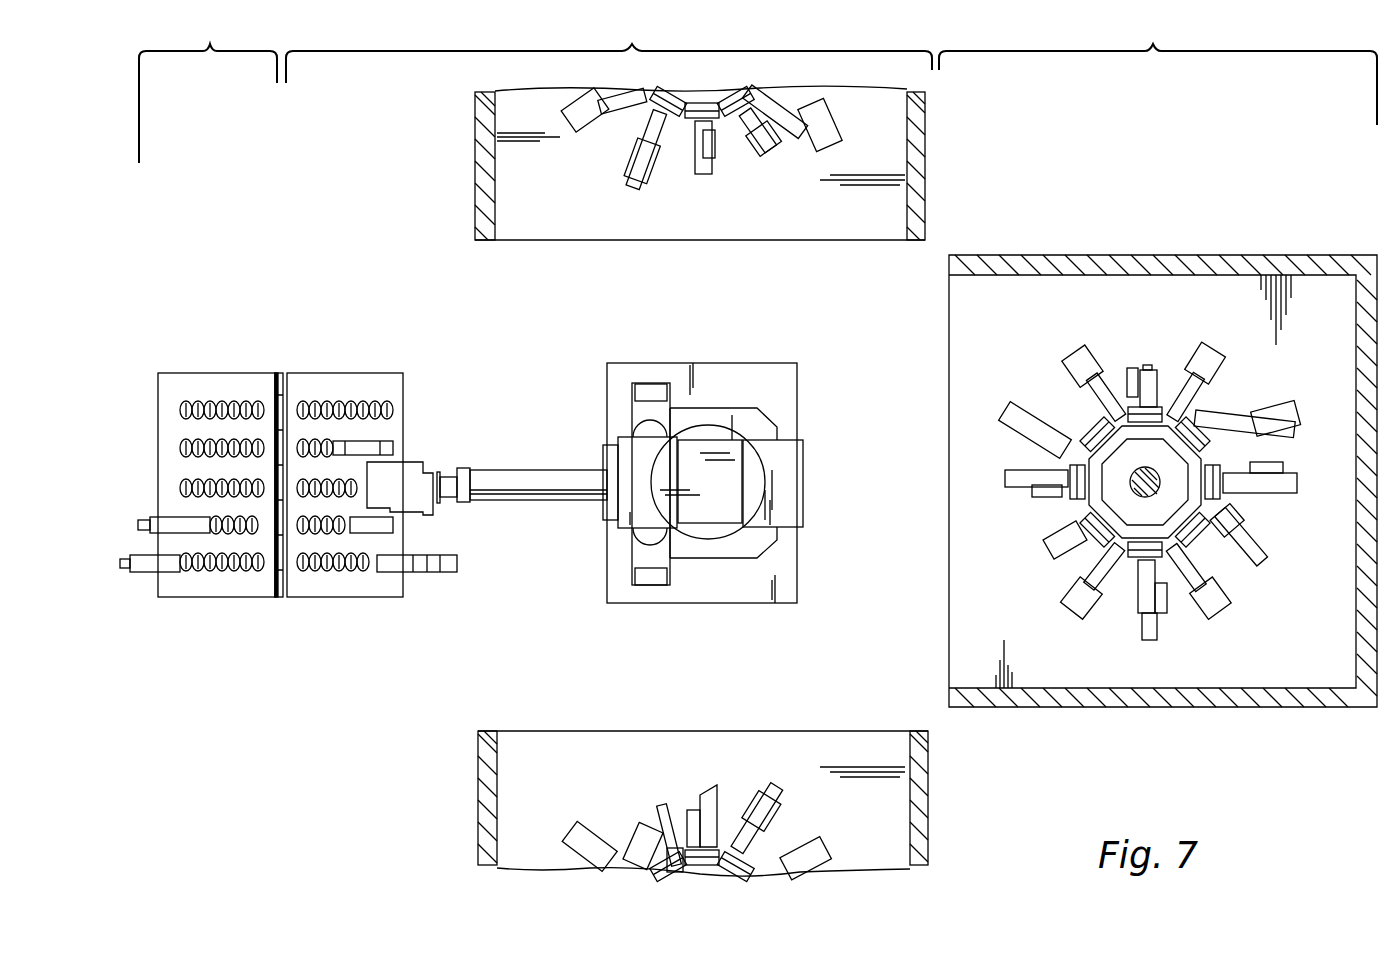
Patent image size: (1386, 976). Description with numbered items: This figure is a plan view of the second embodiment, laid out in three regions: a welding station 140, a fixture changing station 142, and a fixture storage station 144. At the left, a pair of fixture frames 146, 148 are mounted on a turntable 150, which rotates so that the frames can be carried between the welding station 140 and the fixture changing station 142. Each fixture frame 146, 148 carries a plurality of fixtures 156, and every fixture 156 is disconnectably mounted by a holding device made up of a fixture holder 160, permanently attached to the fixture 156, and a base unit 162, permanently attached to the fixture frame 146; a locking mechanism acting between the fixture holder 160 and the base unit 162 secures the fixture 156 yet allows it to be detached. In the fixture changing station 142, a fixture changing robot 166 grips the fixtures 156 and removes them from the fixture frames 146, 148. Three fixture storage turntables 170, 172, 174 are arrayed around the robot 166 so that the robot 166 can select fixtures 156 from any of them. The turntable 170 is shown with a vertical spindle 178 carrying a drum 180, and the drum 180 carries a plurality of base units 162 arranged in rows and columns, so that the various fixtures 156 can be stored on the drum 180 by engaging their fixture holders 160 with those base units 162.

The welding station 140 is at (208, 90).
The fixture changing station 142 is at (609, 50).
The fixture storage station 144 is at (1158, 71).
The fixture frame 146 is at (162, 433).
The fixture frame 148 is at (393, 432).
The turntable 150 is at (277, 467).
The fixture 156 is at (1142, 368).
The fixture holder 160 is at (1138, 420).
The base unit 162 is at (373, 397).
The fixture changing robot 166 is at (617, 528).
The fixture storage turntable 170 is at (1157, 247).
The fixture storage turntable 172 is at (938, 151).
The fixture storage turntable 174 is at (938, 790).
The vertical spindle 178 is at (1163, 483).
The drum 180 is at (1073, 502).